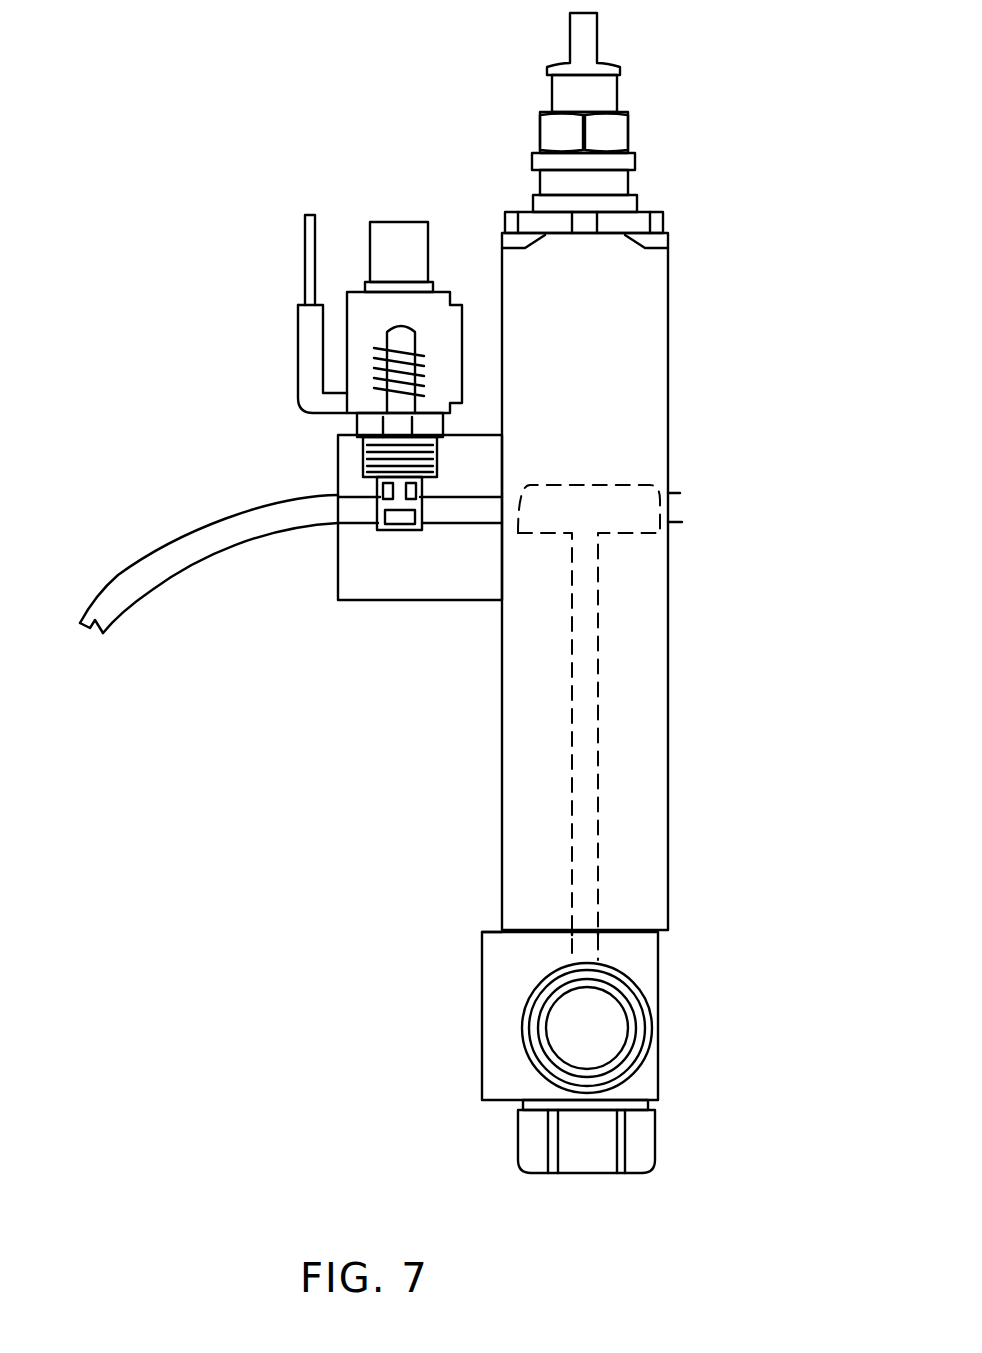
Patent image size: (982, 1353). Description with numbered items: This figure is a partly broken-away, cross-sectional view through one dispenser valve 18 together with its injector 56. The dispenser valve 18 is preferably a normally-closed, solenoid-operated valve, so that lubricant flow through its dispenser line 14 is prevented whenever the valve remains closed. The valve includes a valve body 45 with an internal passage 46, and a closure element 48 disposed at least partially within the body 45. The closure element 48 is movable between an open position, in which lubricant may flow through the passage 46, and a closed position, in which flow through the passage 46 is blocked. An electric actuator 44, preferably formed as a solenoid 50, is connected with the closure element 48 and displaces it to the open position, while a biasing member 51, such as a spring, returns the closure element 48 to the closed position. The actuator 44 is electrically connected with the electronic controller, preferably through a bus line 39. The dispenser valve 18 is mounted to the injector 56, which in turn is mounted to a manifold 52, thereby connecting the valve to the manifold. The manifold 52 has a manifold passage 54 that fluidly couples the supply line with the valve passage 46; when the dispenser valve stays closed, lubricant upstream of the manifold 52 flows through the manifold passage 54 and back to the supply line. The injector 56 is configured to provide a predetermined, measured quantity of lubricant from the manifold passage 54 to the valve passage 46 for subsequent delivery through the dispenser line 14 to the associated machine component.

The dispenser line 14 is at (156, 522).
The dispenser valve 18 is at (220, 414).
The bus line 39 is at (305, 250).
The electric actuator 44 is at (418, 345).
The valve body 45 is at (398, 600).
The internal passage 46 is at (355, 515).
The closure element 48 is at (377, 478).
The solenoid 50 is at (424, 372).
The biasing member 51 is at (367, 452).
The manifold 52 is at (462, 1017).
The manifold passage 54 is at (605, 1020).
The injector 56 is at (690, 662).